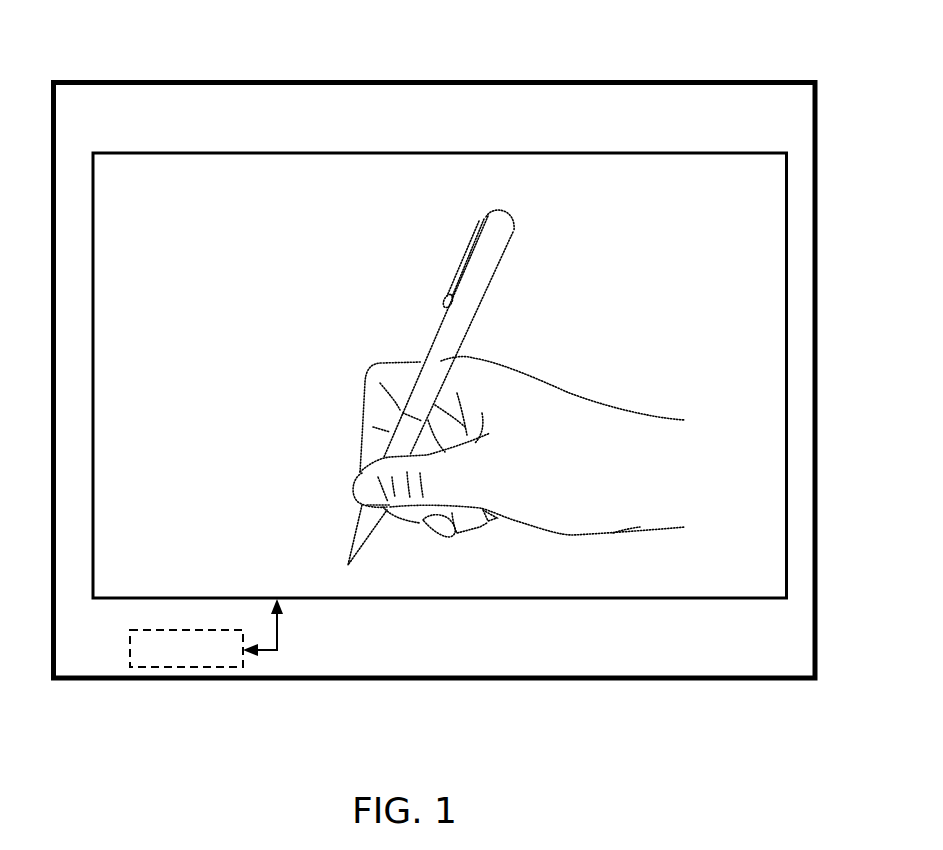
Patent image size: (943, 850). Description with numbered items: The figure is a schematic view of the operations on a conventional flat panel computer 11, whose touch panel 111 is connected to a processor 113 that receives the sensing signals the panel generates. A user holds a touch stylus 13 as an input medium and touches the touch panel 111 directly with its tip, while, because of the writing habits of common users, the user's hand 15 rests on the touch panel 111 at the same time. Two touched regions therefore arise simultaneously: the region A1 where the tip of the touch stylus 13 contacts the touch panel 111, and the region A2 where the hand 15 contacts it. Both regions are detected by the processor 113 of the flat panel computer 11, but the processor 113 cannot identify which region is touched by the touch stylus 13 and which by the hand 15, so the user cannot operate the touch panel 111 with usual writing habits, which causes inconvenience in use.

The flat panel computer 11 is at (508, 80).
The touch panel 111 is at (242, 152).
The processor 113 is at (128, 657).
The touch stylus 13 is at (497, 248).
The hand 15 is at (567, 392).
The stylus tip contact position A1 is at (338, 554).
The hand contact position A2 is at (489, 536).